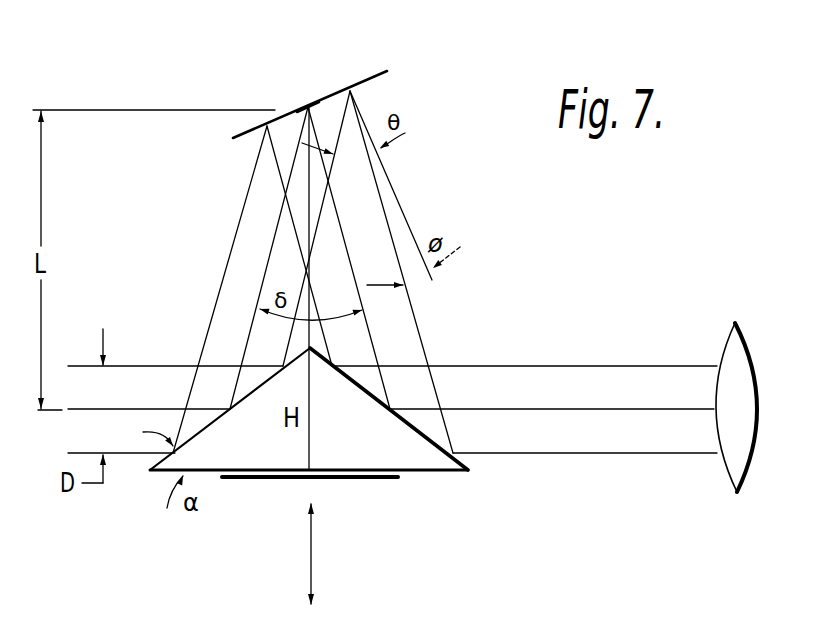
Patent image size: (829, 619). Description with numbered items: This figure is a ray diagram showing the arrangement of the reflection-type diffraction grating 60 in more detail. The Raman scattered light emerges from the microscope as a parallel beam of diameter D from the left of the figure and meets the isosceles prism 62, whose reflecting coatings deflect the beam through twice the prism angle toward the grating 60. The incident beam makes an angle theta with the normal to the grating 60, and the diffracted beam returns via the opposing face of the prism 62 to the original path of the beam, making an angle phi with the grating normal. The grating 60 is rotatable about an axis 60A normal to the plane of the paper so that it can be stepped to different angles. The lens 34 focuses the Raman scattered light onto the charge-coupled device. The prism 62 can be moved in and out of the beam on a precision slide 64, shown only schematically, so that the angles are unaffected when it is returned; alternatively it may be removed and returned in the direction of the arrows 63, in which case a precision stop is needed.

The reflection-type diffraction grating 60 is at (373, 73).
The axis 60A is at (308, 107).
The isosceles prism 62 is at (440, 478).
The arrows 63 is at (310, 538).
The precision slide 64 is at (368, 482).
The lens 34 is at (725, 470).